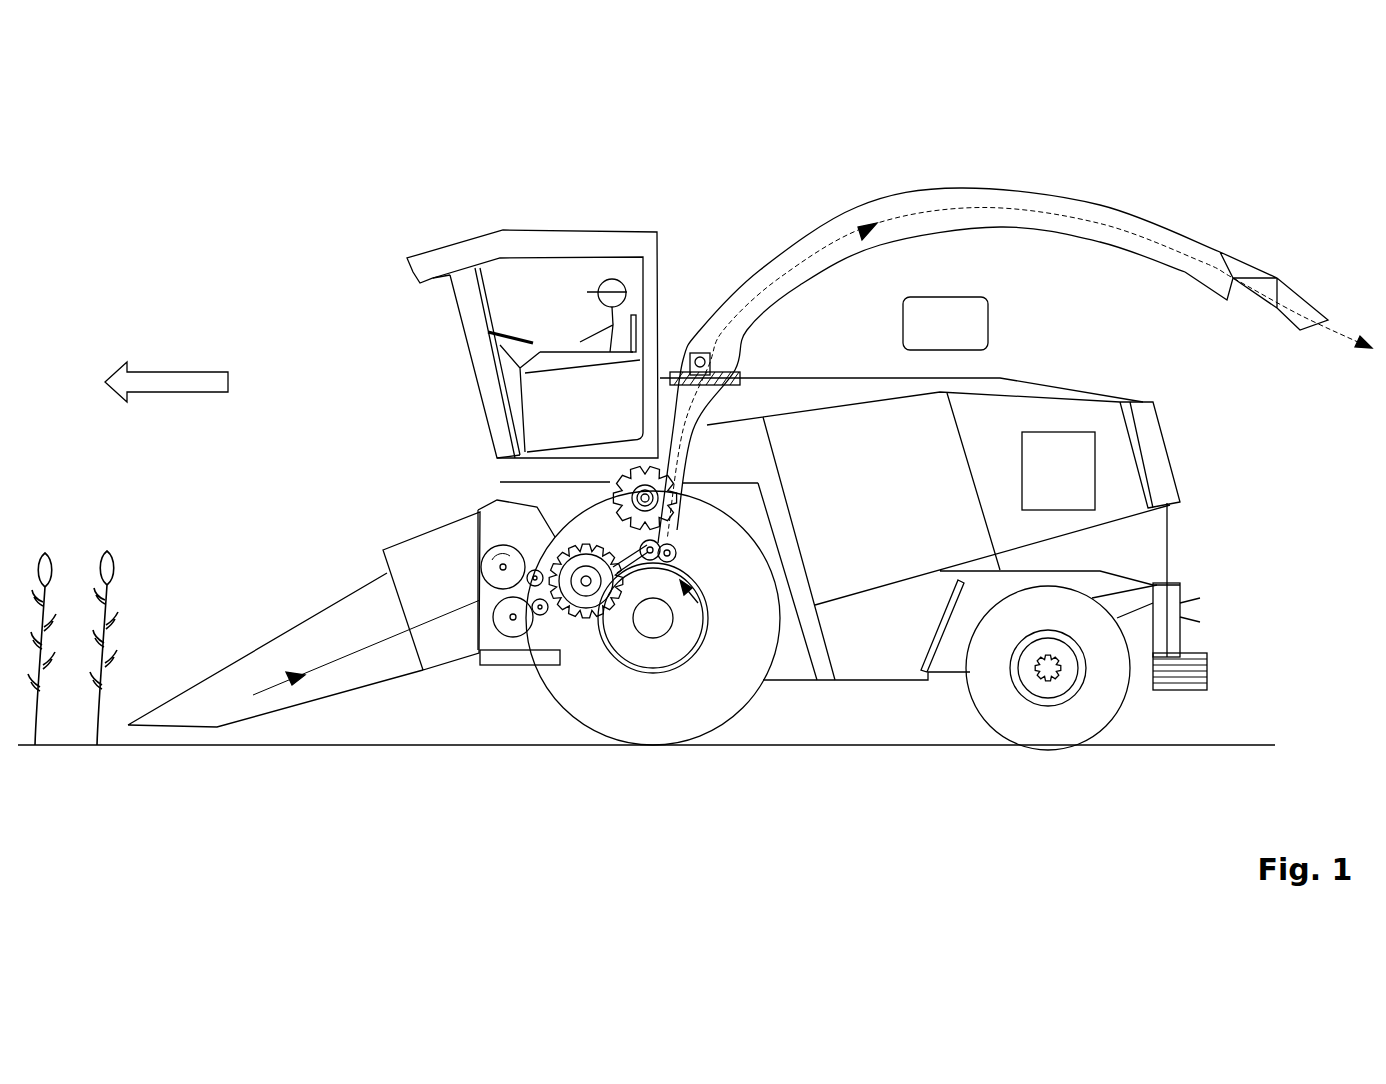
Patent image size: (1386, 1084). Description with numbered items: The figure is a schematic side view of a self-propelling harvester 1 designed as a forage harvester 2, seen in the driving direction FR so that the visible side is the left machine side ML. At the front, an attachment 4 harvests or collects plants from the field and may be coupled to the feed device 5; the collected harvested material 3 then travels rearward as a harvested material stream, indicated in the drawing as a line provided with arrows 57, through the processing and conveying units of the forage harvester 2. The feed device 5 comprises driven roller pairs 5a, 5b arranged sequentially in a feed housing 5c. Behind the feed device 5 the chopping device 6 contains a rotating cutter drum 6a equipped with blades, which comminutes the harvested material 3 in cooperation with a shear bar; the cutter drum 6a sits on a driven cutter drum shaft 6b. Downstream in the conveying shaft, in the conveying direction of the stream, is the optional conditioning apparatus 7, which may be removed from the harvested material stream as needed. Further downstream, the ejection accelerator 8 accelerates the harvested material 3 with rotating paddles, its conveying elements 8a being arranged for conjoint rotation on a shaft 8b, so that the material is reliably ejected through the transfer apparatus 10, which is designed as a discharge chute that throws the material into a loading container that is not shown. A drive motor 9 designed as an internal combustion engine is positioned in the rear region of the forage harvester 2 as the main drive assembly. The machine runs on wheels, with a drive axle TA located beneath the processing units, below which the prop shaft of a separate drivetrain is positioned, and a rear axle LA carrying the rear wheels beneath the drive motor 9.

The self-propelling harvester 1 is at (757, 455).
The forage harvester 2 is at (757, 455).
The harvested material 3 is at (770, 290).
The attachment 4 is at (318, 571).
The feed device 5 is at (486, 561).
The roller pair 5a is at (487, 550).
The roller pair 5b is at (535, 570).
The feed housing 5c is at (497, 455).
The chopping device 6 is at (545, 629).
The cutter drum 6a is at (585, 590).
The cutter drum shaft 6b is at (588, 590).
The conditioning apparatus 7 is at (705, 610).
The ejection accelerator 8 is at (660, 384).
The conveying elements 8a is at (662, 470).
The shaft 8b is at (632, 488).
The drive motor 9 is at (1049, 488).
The transfer apparatus 10 is at (900, 195).
The arrows 57 is at (1337, 337).
The driving direction FR is at (187, 377).
The rear axle LA is at (1050, 672).
The drive axle TA is at (653, 620).
The left machine side ML is at (945, 323).